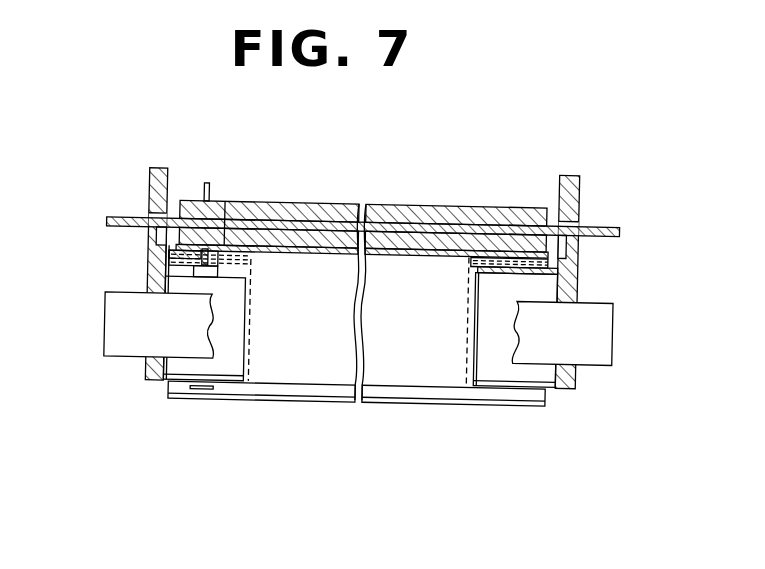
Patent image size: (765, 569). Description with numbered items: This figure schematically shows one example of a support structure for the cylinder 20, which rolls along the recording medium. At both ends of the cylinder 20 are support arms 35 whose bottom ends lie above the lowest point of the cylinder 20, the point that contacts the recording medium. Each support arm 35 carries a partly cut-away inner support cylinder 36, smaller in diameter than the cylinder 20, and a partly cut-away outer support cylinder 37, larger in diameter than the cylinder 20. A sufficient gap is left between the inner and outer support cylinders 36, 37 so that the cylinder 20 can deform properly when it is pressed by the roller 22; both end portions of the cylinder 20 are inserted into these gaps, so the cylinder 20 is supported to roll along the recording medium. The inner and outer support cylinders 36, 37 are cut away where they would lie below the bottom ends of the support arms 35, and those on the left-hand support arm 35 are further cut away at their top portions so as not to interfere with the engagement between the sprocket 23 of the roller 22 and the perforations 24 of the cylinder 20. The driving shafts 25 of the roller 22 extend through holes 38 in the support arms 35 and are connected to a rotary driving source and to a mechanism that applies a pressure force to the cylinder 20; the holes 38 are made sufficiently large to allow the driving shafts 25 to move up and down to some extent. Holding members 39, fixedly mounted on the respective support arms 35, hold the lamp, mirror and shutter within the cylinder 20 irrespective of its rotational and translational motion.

The cylinder 20 is at (300, 400).
The roller 22 is at (296, 201).
The sprocket 23 is at (207, 200).
The perforations 24 is at (218, 268).
The driving shafts 25 is at (122, 218).
The support arms 35 is at (150, 370).
The inner support cylinder 36 is at (252, 366).
The outer support cylinder 37 is at (252, 300).
The holes 38 is at (152, 236).
The holding members 39 is at (120, 322).